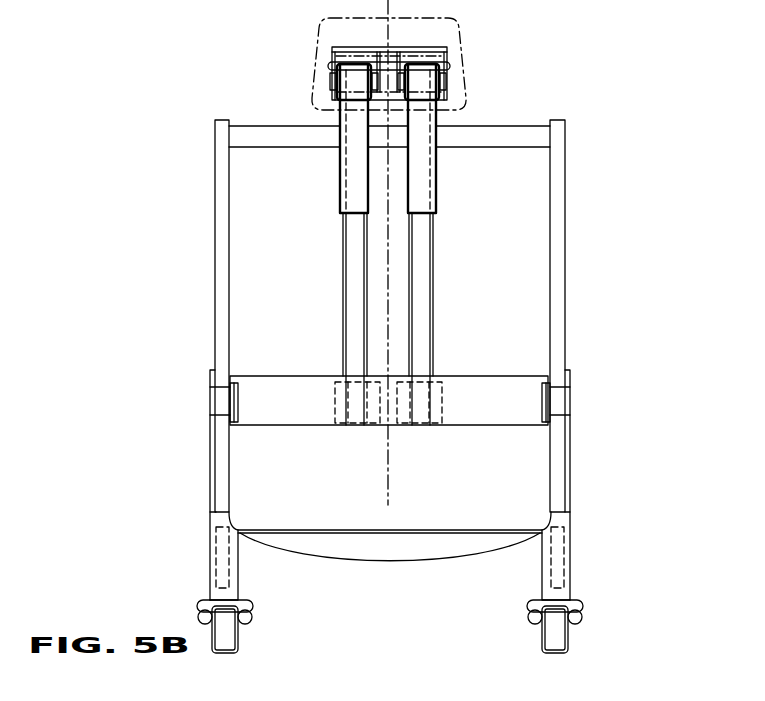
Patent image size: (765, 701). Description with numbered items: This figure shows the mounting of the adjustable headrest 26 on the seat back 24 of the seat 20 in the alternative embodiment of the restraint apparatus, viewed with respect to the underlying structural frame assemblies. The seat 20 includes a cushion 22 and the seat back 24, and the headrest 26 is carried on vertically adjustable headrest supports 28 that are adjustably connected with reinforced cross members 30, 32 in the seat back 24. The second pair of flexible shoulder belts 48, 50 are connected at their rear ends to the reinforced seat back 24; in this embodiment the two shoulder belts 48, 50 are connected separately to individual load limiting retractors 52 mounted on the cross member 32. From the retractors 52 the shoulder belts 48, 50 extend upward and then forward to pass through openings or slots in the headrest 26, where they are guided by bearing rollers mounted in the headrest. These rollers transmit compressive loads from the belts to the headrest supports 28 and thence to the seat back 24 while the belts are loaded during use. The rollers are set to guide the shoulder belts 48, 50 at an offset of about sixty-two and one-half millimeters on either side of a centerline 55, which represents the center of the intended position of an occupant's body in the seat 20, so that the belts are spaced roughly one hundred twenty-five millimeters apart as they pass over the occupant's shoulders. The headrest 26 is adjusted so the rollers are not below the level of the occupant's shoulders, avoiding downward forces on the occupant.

The seat 20 is at (205, 468).
The cushion 22 is at (205, 556).
The seat back 24 is at (213, 246).
The adjustable headrest 26 is at (328, 33).
The headrest supports 28 is at (352, 277).
The reinforced cross member 30 is at (538, 125).
The reinforced cross member 32 is at (270, 390).
The shoulder belt 48 is at (437, 190).
The shoulder belt 50 is at (340, 190).
The load limiting retractor 52 is at (325, 400).
The centerline 55 is at (390, 453).